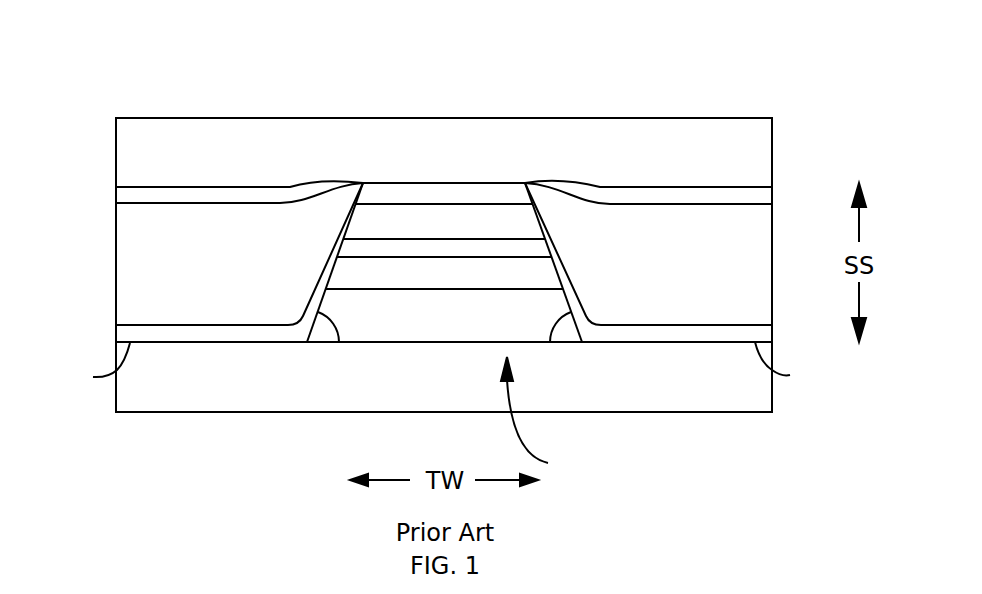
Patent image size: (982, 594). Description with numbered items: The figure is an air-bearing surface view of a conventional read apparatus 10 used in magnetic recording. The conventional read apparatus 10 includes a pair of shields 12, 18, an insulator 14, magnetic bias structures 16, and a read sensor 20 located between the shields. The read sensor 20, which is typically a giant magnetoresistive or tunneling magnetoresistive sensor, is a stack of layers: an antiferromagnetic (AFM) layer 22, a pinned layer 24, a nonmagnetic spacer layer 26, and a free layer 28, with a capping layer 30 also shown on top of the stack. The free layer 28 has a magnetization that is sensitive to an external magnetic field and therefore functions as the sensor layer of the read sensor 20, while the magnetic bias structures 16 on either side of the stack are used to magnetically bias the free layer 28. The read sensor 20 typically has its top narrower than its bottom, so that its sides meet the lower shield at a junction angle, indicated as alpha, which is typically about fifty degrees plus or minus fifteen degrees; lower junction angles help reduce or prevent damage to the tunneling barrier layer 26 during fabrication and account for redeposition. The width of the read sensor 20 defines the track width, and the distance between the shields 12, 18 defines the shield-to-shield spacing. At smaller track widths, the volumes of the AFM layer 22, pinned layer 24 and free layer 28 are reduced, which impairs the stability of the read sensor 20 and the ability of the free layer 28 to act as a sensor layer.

The conventional read apparatus 10 is at (430, 46).
The shield 12 is at (444, 374).
The insulator 14 is at (440, 366).
The magnetic bias structures 16 is at (444, 254).
The shield 18 is at (444, 163).
The read sensor 20 is at (544, 417).
The antiferromagnetic (AFM) layer 22 is at (444, 322).
The pinned layer 24 is at (444, 273).
The nonmagnetic spacer layer 26 is at (336, 247).
The free layer 28 is at (444, 224).
The capping layer 30 is at (444, 195).